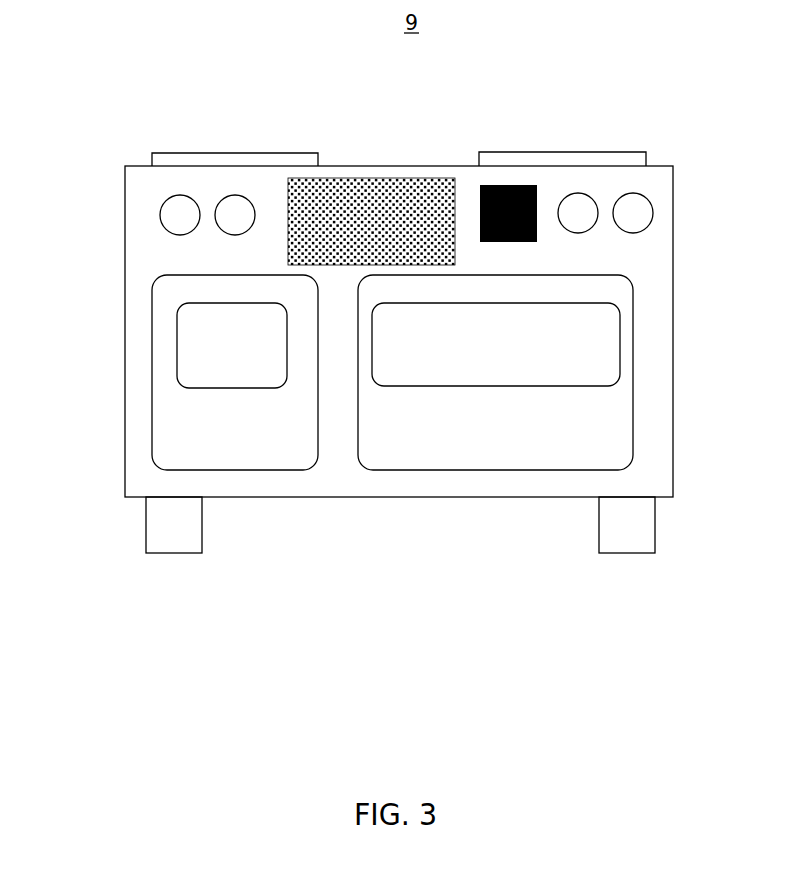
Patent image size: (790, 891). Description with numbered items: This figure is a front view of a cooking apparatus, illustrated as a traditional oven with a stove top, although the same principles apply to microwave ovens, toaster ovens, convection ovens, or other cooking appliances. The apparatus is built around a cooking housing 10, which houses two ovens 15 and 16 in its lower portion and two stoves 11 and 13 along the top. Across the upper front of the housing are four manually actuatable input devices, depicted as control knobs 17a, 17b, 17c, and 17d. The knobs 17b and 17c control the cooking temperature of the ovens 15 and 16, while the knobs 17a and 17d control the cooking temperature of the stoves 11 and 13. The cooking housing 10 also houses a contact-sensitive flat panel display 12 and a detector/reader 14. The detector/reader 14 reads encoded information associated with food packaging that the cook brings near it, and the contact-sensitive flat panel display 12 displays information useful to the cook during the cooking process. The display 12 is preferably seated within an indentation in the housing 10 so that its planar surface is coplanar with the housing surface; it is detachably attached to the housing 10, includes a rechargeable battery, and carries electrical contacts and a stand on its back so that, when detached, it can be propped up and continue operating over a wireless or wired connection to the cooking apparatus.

The cooking housing 10 is at (125, 261).
The stove 11 is at (227, 153).
The contact-sensitive flat panel display 12 is at (410, 190).
The stove 13 is at (505, 152).
The detector/reader 14 is at (528, 185).
The oven 15 is at (180, 397).
The oven 16 is at (613, 400).
The manually actuatable input device 17a is at (162, 210).
The manually actuatable input device 17b is at (577, 194).
The manually actuatable input device 17c is at (247, 203).
The manually actuatable input device 17d is at (654, 205).